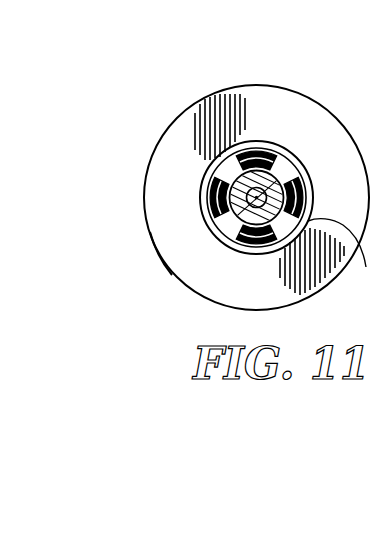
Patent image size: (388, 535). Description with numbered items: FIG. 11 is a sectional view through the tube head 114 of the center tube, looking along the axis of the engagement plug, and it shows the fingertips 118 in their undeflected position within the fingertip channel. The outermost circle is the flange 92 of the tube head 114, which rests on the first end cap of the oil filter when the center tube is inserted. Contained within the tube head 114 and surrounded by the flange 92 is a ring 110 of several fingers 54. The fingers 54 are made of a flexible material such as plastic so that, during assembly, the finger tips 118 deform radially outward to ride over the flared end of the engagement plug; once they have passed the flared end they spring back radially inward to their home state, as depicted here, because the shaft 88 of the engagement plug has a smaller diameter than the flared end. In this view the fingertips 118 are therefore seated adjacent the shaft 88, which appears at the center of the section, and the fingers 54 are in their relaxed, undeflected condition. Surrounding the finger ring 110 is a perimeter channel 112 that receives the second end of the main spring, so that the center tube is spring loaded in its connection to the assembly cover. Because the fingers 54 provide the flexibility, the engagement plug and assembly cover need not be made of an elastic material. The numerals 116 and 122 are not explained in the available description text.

The fingers 54 is at (295, 183).
The shaft 88 is at (240, 215).
The flange 92 is at (160, 258).
The ring 110 is at (331, 258).
The perimeter channel 112 is at (213, 220).
The tube head 114 is at (160, 128).
The opening 116 is at (266, 165).
The finger tips 118 is at (226, 190).
The disc face 122 is at (255, 287).